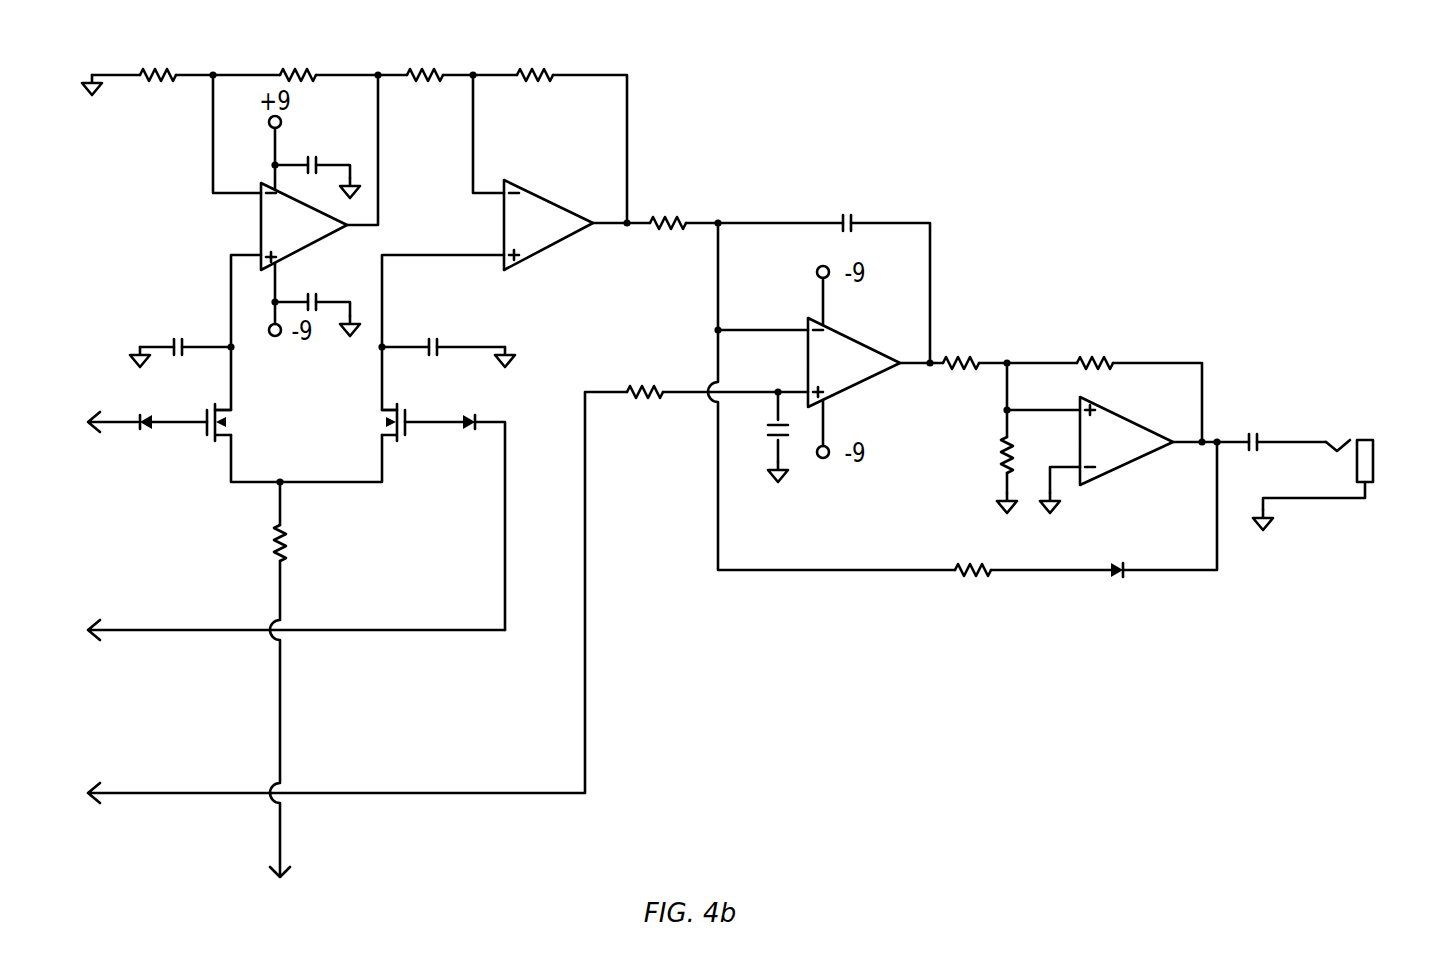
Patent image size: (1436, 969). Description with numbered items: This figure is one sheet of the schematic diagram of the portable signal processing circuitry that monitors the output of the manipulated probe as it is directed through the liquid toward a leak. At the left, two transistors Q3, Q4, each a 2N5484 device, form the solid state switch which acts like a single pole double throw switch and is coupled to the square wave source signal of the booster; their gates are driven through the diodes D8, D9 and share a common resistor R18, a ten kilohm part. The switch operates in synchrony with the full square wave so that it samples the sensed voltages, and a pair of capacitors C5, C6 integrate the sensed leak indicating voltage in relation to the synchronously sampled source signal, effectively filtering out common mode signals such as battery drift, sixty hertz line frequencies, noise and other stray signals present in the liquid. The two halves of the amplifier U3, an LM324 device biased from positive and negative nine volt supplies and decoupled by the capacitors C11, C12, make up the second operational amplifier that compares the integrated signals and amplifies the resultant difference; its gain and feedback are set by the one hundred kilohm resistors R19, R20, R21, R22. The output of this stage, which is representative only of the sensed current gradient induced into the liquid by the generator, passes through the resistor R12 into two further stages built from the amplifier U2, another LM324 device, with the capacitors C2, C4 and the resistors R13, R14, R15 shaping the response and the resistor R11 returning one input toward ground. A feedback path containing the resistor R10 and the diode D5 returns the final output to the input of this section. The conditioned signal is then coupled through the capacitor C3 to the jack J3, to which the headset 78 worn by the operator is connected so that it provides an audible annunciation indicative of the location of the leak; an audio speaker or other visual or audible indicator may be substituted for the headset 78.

The headset 78 is at (1337, 454).
The output jack connector J3 is at (1313, 485).
The amplifier U2 is at (990, 401).
The amplifier U3 is at (427, 225).
The transistor Q3 is at (238, 422).
The transistor Q4 is at (370, 422).
The diode D5 is at (1120, 555).
The diode D8 is at (156, 407).
The diode D9 is at (466, 407).
The resistor R10 is at (978, 555).
The resistor R11 is at (985, 455).
The resistor R12 is at (671, 205).
The resistor R13 is at (967, 346).
The resistor R14 is at (1095, 346).
The resistor R15 is at (645, 376).
The resistor R18 is at (300, 544).
The resistor R19 is at (158, 59).
The resistor R20 is at (298, 59).
The resistor R21 is at (535, 59).
The resistor R22 is at (425, 59).
The capacitor C2 is at (846, 206).
The capacitor C3 is at (1255, 428).
The capacitor C4 is at (761, 428).
The capacitor C5 is at (178, 333).
The capacitor C6 is at (433, 332).
The capacitor C11 is at (314, 150).
The capacitor C12 is at (314, 288).